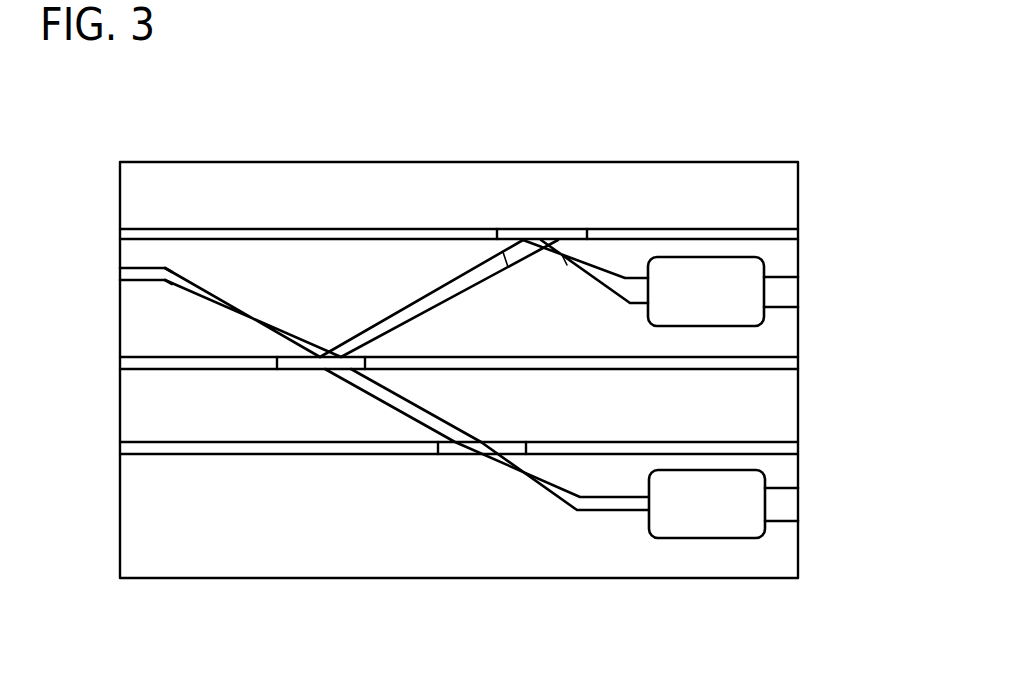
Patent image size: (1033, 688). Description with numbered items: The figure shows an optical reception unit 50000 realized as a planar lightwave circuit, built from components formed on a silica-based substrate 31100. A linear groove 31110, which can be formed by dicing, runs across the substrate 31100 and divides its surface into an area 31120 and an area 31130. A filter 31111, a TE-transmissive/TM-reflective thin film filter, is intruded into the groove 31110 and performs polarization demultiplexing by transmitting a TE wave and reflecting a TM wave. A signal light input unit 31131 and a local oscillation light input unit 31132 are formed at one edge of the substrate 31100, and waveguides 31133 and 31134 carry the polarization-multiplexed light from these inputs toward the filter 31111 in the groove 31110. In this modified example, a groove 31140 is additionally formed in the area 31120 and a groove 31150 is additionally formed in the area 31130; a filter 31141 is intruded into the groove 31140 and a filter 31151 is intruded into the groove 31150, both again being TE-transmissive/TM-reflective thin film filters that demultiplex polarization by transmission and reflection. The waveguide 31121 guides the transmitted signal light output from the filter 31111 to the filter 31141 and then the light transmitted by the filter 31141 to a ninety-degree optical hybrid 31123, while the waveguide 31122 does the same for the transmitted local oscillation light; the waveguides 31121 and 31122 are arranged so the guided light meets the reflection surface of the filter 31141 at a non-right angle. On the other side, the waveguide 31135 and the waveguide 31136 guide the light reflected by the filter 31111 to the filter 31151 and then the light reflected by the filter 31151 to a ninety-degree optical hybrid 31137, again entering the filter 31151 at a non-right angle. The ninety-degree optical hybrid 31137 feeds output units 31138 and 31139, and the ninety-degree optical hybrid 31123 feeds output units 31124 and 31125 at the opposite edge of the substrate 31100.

The optical reception unit 50000 is at (430, 128).
The silica-based substrate 31100 is at (224, 160).
The area 31130 is at (620, 170).
The groove 31150 is at (249, 236).
The filter 31151 is at (553, 236).
The signal light input unit 31131 is at (138, 268).
The local oscillation light input unit 31132 is at (135, 282).
The waveguide 31133 is at (267, 323).
The waveguide 31134 is at (168, 285).
The waveguide 31135 is at (607, 292).
The waveguide 31136 is at (537, 286).
The 90-degree optical hybrid 31137 is at (728, 268).
The output unit 31138 is at (782, 278).
The output unit 31139 is at (782, 308).
The groove 31110 is at (188, 366).
The filter 31111 is at (287, 366).
The waveguide 31121 is at (553, 480).
The waveguide 31122 is at (415, 423).
The groove 31140 is at (233, 449).
The filter 31141 is at (450, 447).
The area 31120 is at (282, 568).
The 90-degree optical hybrid 31123 is at (732, 526).
The output unit 31124 is at (783, 489).
The output unit 31125 is at (783, 522).